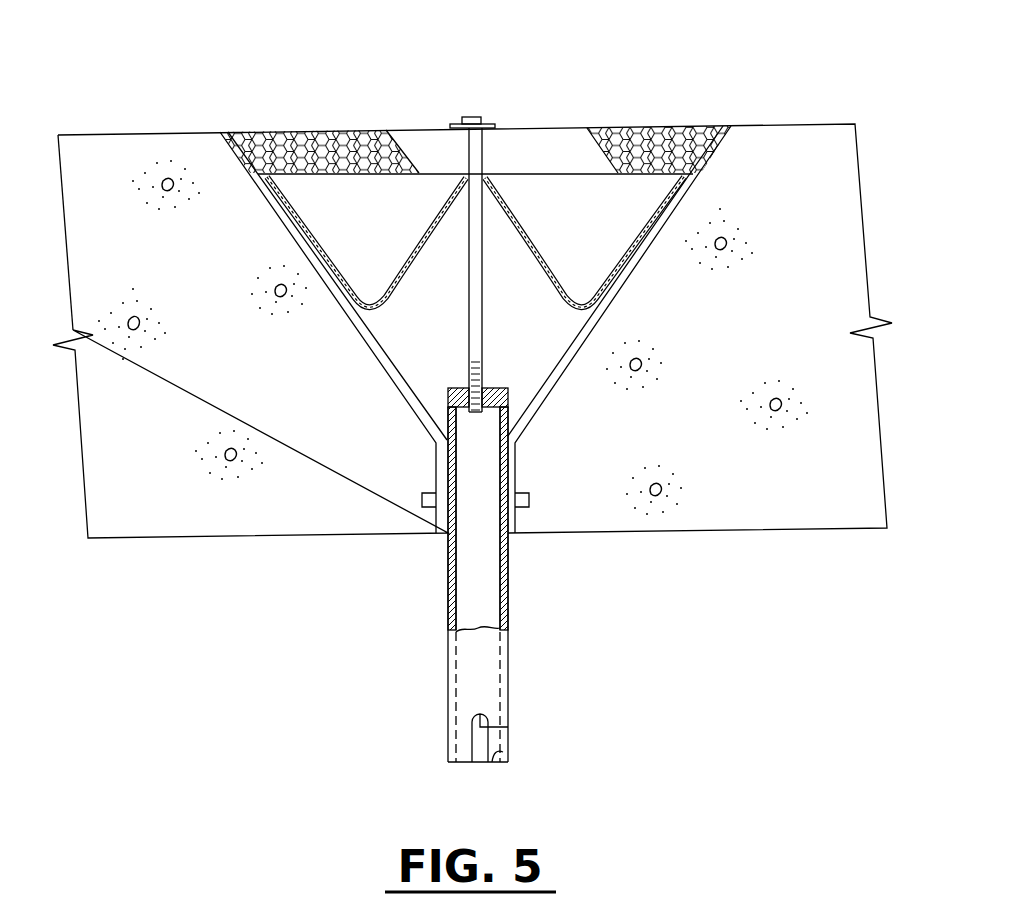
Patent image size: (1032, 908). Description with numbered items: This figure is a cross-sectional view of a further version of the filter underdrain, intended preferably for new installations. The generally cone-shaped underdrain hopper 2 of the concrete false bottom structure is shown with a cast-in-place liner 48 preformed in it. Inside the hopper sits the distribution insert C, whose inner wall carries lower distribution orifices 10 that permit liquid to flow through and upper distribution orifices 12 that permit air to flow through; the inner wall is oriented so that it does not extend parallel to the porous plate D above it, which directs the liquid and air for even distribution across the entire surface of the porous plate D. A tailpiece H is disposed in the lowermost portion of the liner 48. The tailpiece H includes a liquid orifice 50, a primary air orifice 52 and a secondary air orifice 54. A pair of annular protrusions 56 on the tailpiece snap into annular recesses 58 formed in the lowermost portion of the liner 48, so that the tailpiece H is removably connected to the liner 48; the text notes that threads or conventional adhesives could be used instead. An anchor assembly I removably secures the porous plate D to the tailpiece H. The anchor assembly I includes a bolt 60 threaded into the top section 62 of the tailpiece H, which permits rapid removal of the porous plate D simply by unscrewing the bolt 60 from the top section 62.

The underdrain hopper 2 is at (475, 329).
The lower distribution orifices 10 is at (475, 242).
The upper distribution orifices 12 is at (430, 221).
The cast-in-place liner 48 is at (400, 388).
The liquid orifice 50 is at (497, 762).
The primary air orifice 52 is at (488, 722).
The secondary air orifice 54 is at (475, 607).
The annular protrusions 56 is at (448, 472).
The annular recesses 58 is at (498, 470).
The bolt 60 is at (483, 324).
The top section 62 is at (452, 388).
The distribution insert C is at (505, 194).
The porous plate D is at (627, 125).
The tailpiece H is at (475, 607).
The anchor assembly I is at (484, 210).